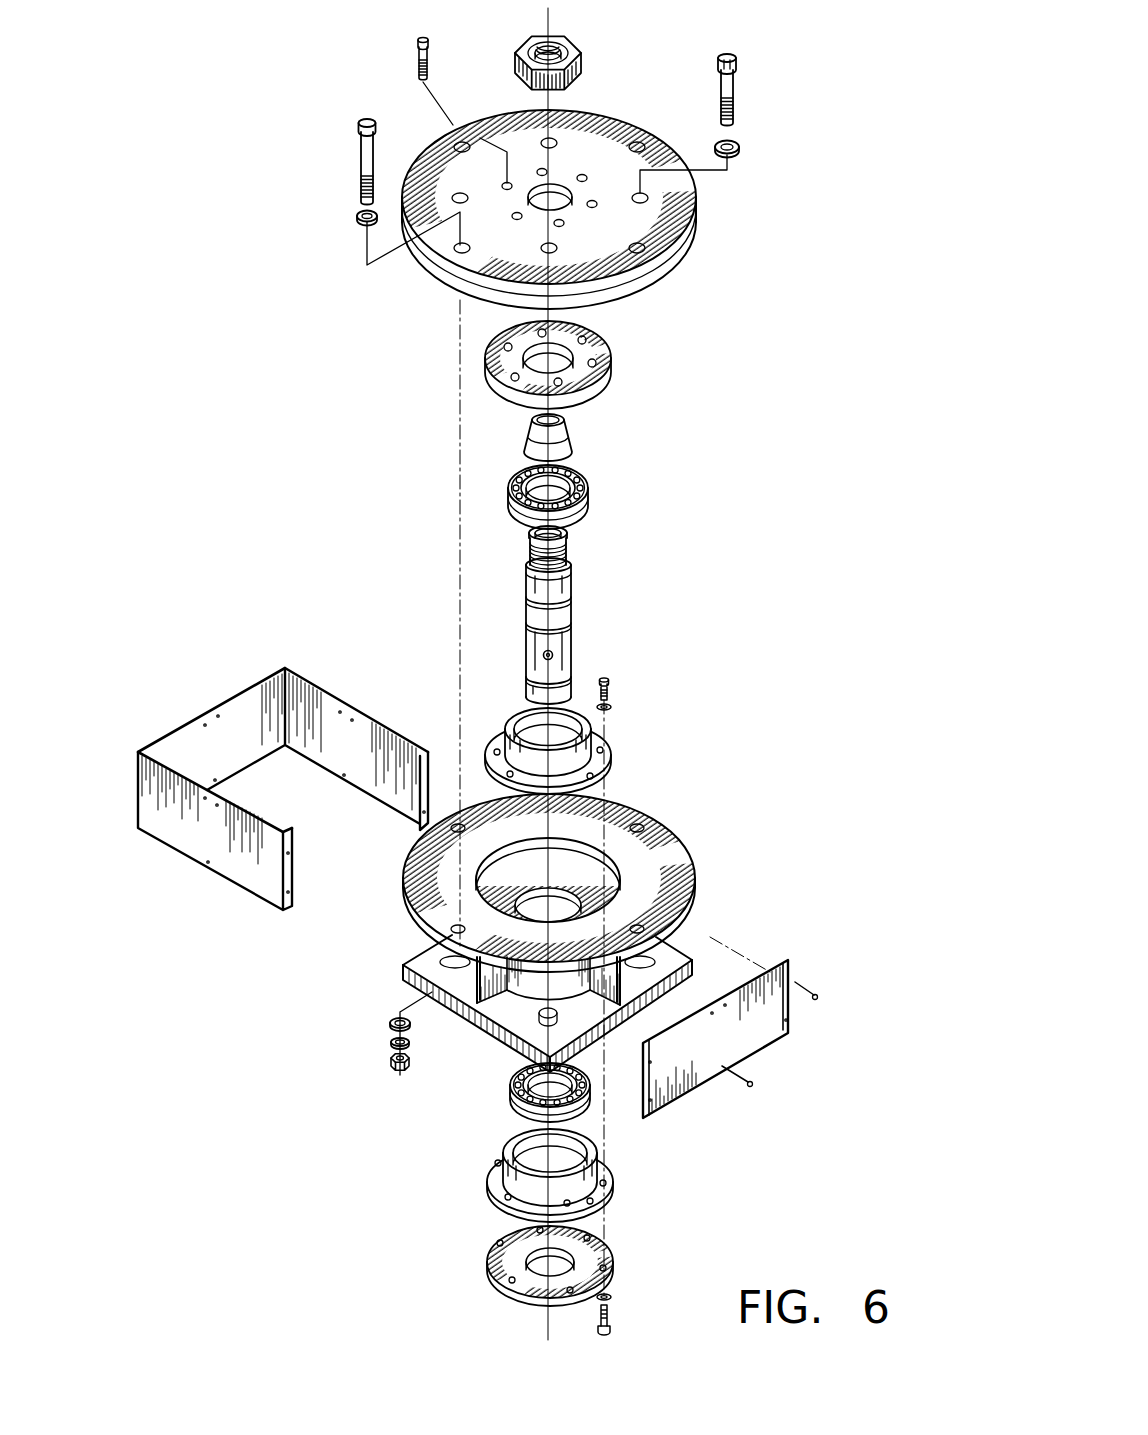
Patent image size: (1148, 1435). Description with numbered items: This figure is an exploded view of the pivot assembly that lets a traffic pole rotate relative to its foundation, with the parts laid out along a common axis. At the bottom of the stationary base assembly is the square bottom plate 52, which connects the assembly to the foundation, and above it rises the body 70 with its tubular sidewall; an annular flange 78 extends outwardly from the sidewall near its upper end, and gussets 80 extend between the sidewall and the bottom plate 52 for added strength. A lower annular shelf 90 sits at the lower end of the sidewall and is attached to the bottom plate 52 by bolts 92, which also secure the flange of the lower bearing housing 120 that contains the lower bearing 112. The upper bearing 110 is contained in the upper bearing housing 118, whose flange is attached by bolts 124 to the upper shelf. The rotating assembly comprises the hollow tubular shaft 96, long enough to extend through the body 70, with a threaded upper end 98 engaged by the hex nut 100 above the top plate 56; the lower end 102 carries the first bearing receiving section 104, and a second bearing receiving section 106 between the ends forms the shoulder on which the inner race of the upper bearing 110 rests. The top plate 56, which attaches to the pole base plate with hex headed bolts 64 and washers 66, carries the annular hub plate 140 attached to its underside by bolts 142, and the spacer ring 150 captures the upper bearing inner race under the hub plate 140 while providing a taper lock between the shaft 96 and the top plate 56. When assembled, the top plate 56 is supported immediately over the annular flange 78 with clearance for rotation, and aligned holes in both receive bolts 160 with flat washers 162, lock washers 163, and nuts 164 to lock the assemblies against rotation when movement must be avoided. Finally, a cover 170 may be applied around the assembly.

The bottom plate 52 is at (407, 963).
The top plate 56 is at (700, 212).
The hex headed bolts 64 is at (736, 80).
The washers 66 is at (740, 145).
The body 70 is at (547, 982).
The annular flange 78 is at (668, 842).
The gussets 80 is at (672, 1005).
The lower annular shelf 90 is at (487, 1267).
The bolts 92 is at (612, 1318).
The tubular shaft 96 is at (573, 600).
The threaded upper end 98 is at (572, 546).
The hex nut 100 is at (573, 38).
The lower end 102 is at (572, 665).
The first bearing receiving section 104 is at (527, 673).
The second bearing receiving section 106 is at (537, 606).
The upper bearing 110 is at (590, 488).
The lower bearing 112 is at (505, 1100).
The upper bearing housing 118 is at (612, 742).
The lower bearing housing 120 is at (487, 1182).
The bolts 124 is at (610, 680).
The annular hub plate 140 is at (598, 355).
The bolts 142 is at (418, 50).
The spacer ring 150 is at (573, 435).
The bolts 160 is at (358, 152).
The flat washers 162 is at (355, 215).
The lock washers 163 is at (392, 1041).
The nuts 164 is at (392, 1058).
The cover 170 is at (205, 870).